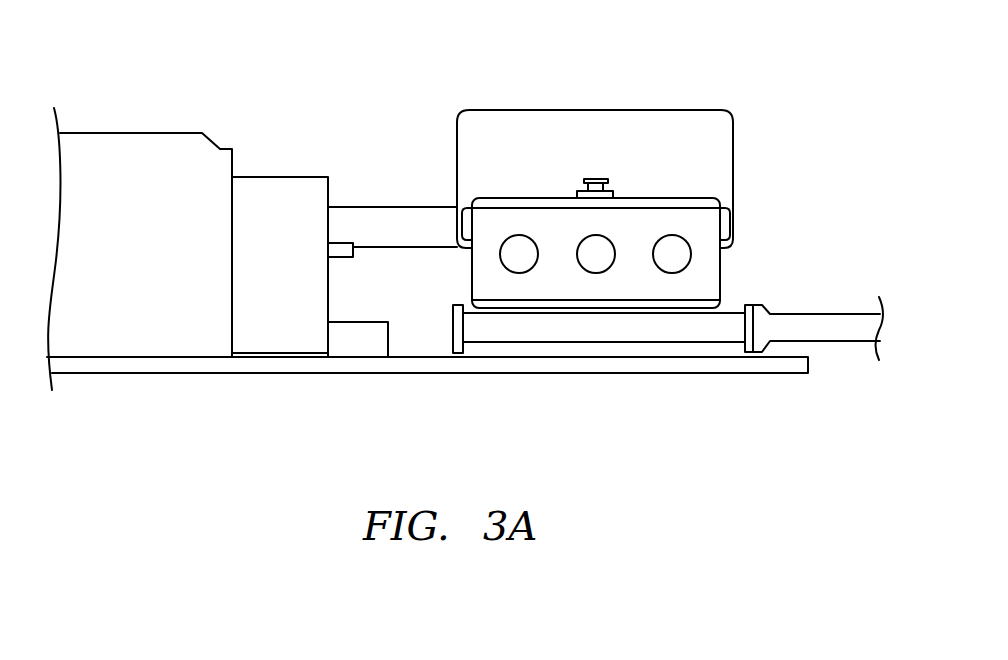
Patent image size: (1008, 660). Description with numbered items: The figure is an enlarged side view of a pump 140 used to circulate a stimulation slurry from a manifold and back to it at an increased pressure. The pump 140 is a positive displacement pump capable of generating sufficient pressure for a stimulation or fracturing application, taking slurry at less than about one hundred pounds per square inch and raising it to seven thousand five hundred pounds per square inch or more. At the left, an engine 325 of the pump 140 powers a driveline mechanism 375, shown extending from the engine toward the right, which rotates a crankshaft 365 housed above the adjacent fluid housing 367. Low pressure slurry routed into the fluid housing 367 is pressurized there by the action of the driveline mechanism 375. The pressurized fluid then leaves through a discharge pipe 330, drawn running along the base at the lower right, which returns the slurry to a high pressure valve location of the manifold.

The engine 325 is at (187, 62).
The pump 140 is at (634, 159).
The crankshaft 365 is at (723, 155).
The fluid housing 367 is at (708, 278).
The driveline mechanism 375 is at (406, 220).
The discharge pipe 330 is at (790, 323).